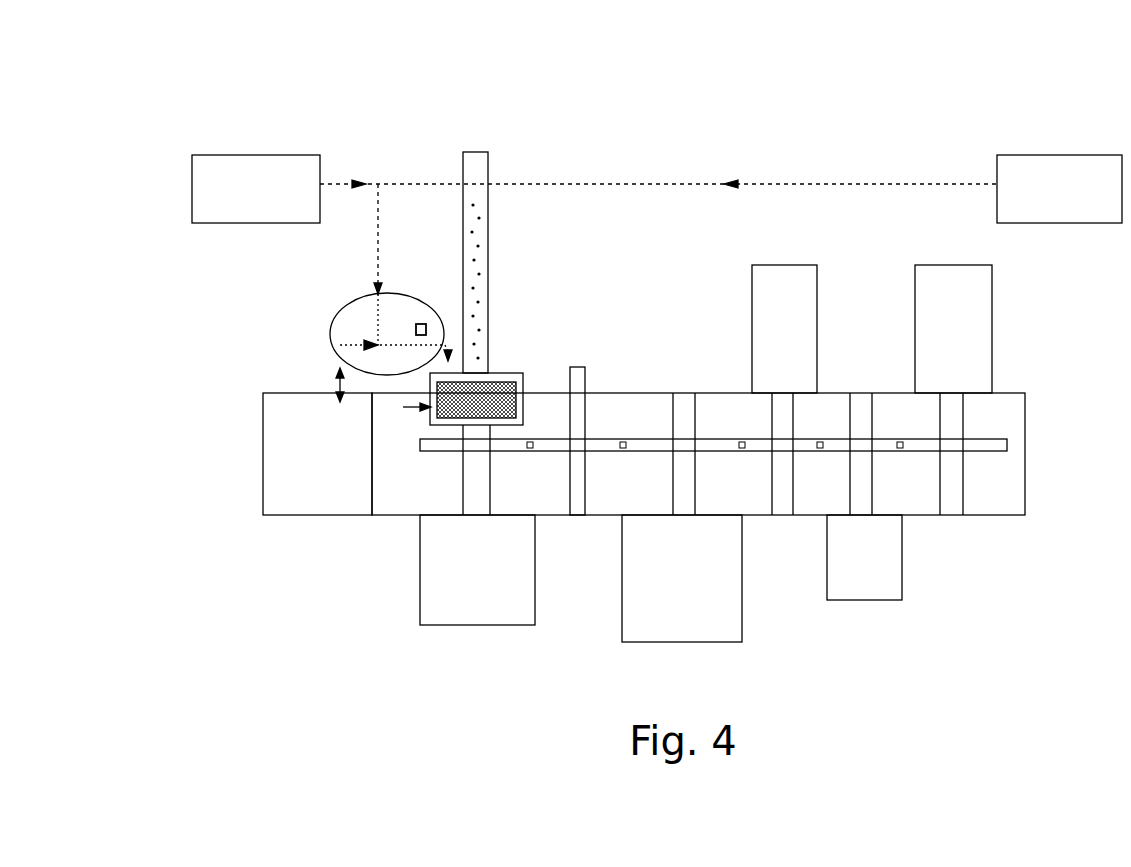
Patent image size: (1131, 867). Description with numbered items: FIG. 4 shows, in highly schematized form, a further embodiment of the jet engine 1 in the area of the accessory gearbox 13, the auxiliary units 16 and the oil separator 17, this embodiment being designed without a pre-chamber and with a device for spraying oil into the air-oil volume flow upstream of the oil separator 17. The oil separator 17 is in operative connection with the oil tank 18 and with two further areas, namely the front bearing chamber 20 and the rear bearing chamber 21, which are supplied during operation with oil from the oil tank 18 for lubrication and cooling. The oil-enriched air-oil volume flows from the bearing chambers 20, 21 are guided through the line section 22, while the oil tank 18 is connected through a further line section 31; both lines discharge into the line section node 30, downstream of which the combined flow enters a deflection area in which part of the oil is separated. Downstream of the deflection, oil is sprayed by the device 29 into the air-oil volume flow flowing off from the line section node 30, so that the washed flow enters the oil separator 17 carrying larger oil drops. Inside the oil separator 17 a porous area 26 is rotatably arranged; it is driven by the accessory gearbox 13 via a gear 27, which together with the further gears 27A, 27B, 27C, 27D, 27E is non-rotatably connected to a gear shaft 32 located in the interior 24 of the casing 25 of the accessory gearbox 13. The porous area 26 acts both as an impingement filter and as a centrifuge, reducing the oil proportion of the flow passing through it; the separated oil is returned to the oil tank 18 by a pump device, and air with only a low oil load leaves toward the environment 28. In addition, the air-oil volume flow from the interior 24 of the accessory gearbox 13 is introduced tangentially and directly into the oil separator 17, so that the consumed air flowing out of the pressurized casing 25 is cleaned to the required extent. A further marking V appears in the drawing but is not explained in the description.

The jet engine 1 is at (166, 146).
The accessory gearbox 13 is at (932, 535).
The auxiliary units 16 is at (855, 610).
The oil separator 17 is at (517, 360).
The oil tank 18 is at (286, 480).
The front bearing chamber 20 is at (268, 165).
The rear bearing chamber 21 is at (1055, 173).
The line section 22 is at (378, 215).
The interior of the casing 24 is at (1012, 417).
The casing 25 is at (1027, 442).
The porous area 26 is at (524, 398).
The gear 27 is at (463, 480).
The further gear 27A is at (568, 520).
The further gear 27B is at (678, 475).
The further gear 27C is at (780, 498).
The further gear 27D is at (858, 497).
The further gear 27E is at (953, 505).
The environment 28 is at (467, 124).
The device for spraying oil 29 is at (421, 322).
The line section node 30 is at (358, 327).
The further line section 31 is at (338, 372).
The gear shaft 32 is at (663, 436).
The displacement velocity V is at (338, 345).